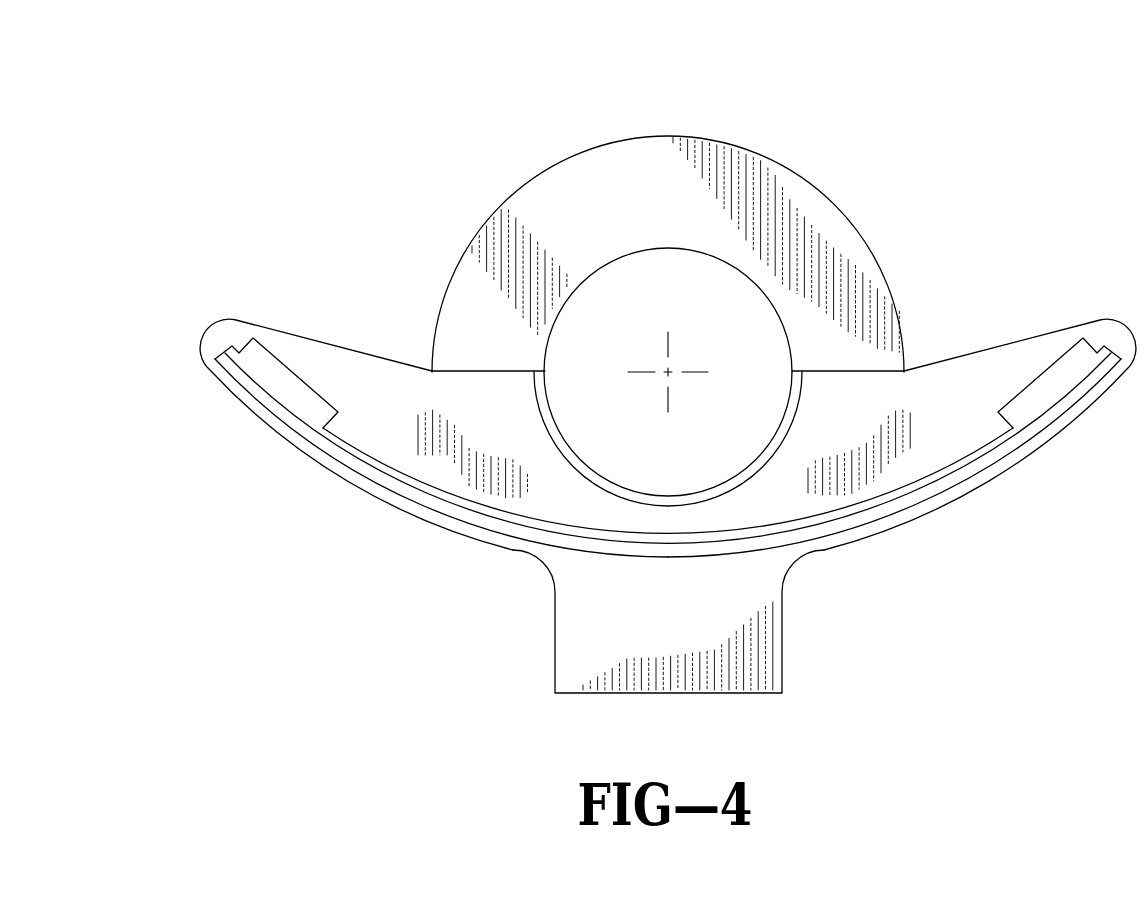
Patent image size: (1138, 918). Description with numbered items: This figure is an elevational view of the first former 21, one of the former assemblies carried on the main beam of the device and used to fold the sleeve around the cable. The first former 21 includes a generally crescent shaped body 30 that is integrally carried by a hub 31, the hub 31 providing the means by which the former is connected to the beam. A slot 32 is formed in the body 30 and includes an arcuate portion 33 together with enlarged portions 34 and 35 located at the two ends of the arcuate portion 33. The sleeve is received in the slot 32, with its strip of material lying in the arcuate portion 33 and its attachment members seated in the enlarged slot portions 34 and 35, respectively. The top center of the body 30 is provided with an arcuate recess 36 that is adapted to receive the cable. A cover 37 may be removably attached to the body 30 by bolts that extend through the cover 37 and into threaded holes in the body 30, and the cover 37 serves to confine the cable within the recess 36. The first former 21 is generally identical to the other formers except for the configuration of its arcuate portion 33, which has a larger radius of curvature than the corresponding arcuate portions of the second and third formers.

The first former 21 is at (956, 141).
The crescent shaped body 30 is at (413, 401).
The hub 31 is at (737, 648).
The slot 32 is at (376, 498).
The arcuate portion 33 is at (918, 493).
The enlarged portion 34 is at (269, 376).
The enlarged portion 35 is at (1067, 376).
The arcuate recess 36 is at (555, 443).
The cover 37 is at (577, 209).